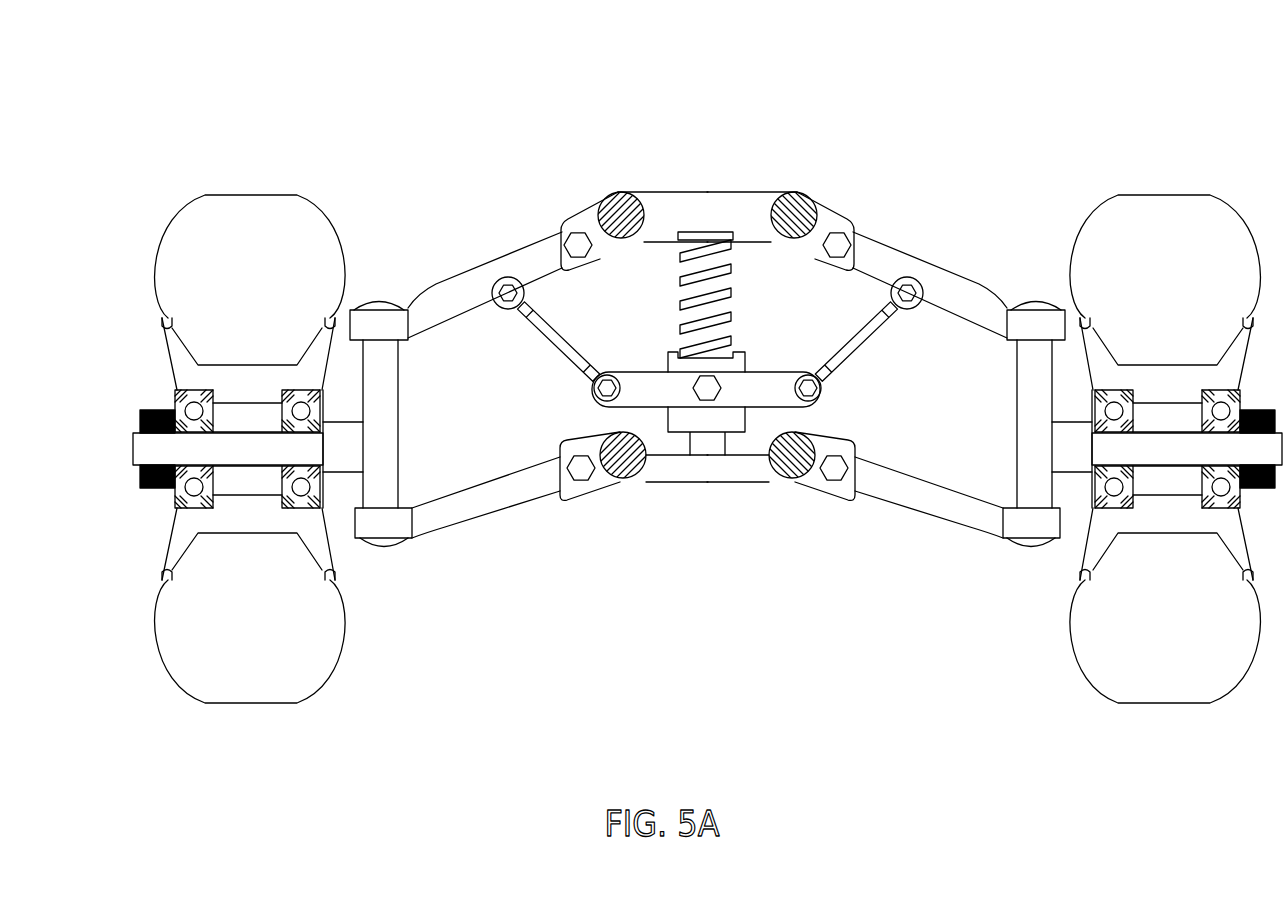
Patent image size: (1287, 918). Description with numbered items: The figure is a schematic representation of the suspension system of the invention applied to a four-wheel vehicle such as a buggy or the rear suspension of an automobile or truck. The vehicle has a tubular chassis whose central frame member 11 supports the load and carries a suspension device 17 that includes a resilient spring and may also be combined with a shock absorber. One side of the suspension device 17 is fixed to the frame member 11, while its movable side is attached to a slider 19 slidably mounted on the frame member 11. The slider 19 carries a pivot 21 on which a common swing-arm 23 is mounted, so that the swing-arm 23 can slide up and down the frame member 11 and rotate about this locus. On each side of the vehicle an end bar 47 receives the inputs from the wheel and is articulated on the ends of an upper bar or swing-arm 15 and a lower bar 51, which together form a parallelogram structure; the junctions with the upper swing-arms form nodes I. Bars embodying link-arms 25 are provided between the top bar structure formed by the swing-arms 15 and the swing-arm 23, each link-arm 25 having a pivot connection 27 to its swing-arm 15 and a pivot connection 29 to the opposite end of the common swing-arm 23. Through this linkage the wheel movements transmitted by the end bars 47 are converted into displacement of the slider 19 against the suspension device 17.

The frame member 11 is at (692, 212).
The swing-arm 15 is at (543, 248).
The suspension device 17 is at (700, 290).
The slider 19 is at (703, 432).
The pivot 21 is at (708, 392).
The swing-arm 23 is at (767, 392).
The link-arm 25 is at (525, 292).
The pivot connection 27 is at (500, 312).
The pivot connection 29 is at (598, 405).
The end bar 47 is at (338, 457).
The lower bar 51 is at (447, 522).
The node I is at (380, 317).